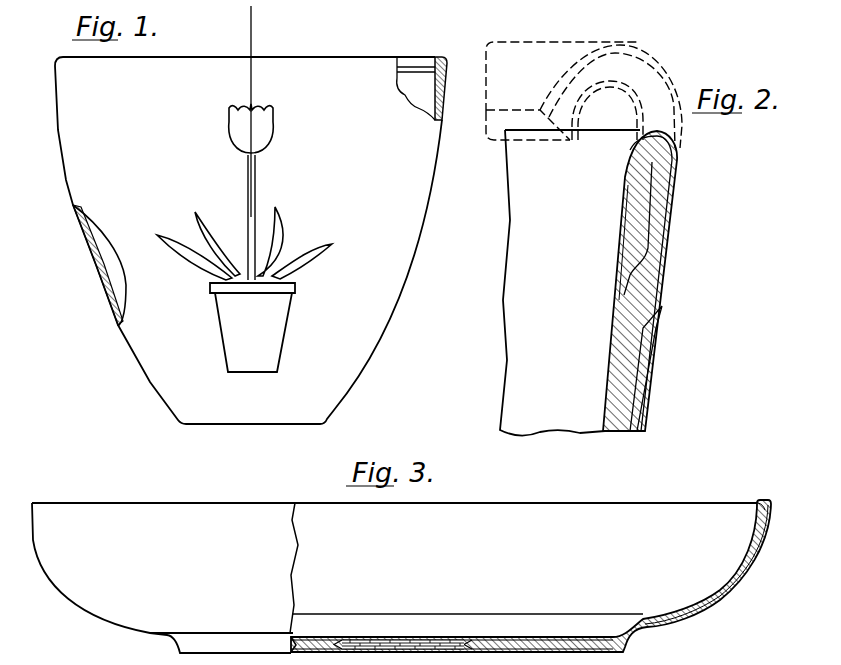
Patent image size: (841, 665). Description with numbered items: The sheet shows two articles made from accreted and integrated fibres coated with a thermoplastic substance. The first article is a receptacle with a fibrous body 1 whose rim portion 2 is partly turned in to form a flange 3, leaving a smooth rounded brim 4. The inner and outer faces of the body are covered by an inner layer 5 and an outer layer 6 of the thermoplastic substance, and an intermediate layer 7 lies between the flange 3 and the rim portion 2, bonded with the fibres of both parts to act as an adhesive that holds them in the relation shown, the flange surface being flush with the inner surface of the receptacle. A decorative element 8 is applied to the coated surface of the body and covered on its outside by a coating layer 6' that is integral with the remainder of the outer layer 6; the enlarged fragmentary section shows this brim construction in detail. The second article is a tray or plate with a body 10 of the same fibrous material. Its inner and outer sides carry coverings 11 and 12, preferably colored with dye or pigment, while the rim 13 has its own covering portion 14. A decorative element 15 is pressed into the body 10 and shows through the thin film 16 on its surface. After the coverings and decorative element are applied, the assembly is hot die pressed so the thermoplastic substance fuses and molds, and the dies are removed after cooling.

In FIG. 1, the fibrous body 1 is at (97, 273).
In FIG. 2, the fibrous body 1 is at (648, 290).
In FIG. 1, the rim portion 2 is at (263, 28).
In FIG. 2, the rim portion 2 is at (661, 156).
In FIG. 1, the flange 3 is at (437, 62).
In FIG. 2, the flange 3 is at (641, 203).
In FIG. 1, the brim 4 is at (446, 58).
In FIG. 2, the brim 4 is at (659, 128).
In FIG. 1, the inner layer 5 is at (100, 271).
In FIG. 2, the inner layer 5 is at (620, 320).
In FIG. 1, the outer layer 6 is at (84, 265).
In FIG. 2, the outer layer 6 is at (661, 283).
In FIG. 2, the coating layer 6' is at (671, 397).
In FIG. 1, the intermediate layer 7 is at (447, 62).
In FIG. 2, the intermediate layer 7 is at (651, 193).
In FIG. 1, the decorative element 8 is at (270, 328).
In FIG. 2, the decorative element 8 is at (656, 358).
In FIG. 3, the body 10 is at (710, 614).
In FIG. 3, the covering 11 is at (724, 578).
In FIG. 3, the covering 12 is at (745, 581).
In FIG. 3, the rim 13 is at (770, 525).
In FIG. 3, the covering portion 14 is at (761, 501).
In FIG. 3, the decorative element 15 is at (443, 637).
In FIG. 3, the film 16 is at (368, 637).